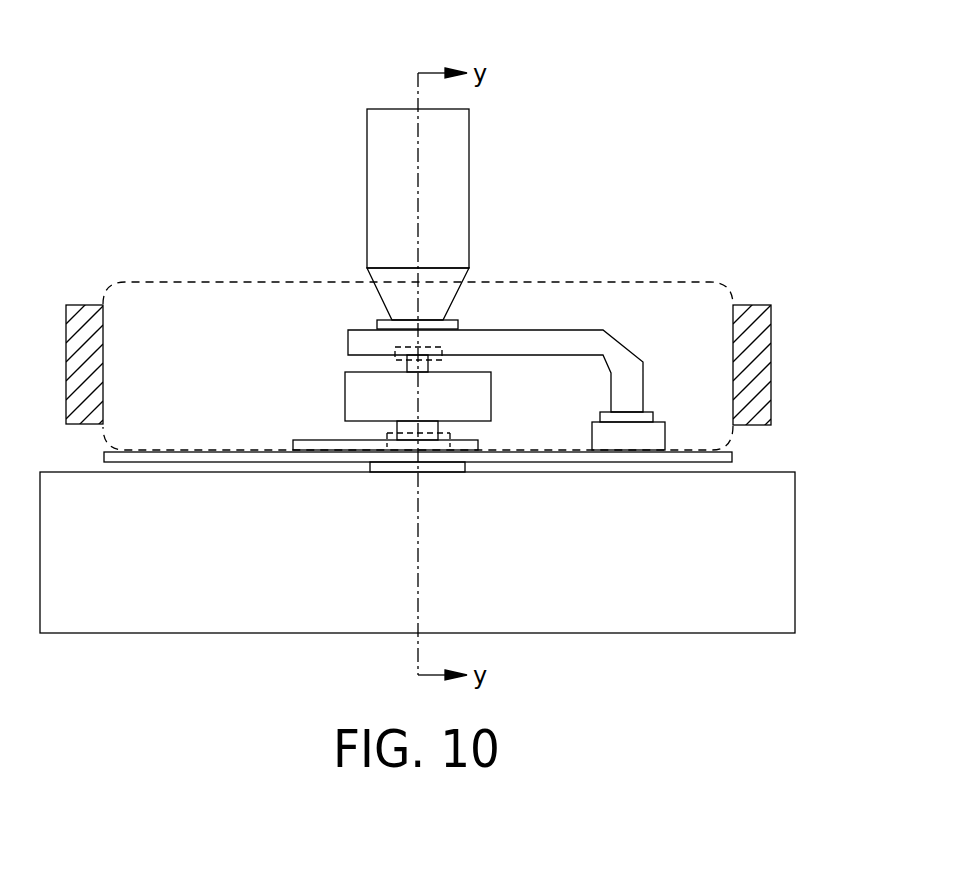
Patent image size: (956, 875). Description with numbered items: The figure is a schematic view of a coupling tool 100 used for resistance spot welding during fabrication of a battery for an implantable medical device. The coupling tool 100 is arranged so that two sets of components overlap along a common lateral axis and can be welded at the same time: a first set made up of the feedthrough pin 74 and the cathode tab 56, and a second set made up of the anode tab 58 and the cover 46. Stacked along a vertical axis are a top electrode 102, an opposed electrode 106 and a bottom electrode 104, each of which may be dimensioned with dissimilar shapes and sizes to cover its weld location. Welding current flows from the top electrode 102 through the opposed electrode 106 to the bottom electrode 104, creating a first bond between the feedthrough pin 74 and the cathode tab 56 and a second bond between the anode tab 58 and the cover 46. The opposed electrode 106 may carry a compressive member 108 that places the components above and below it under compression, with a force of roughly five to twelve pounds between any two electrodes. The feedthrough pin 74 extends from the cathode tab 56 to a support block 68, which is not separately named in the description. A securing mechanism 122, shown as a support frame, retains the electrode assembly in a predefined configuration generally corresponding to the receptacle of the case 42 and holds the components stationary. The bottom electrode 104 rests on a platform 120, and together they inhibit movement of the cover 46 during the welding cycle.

The coupling tool 100 is at (298, 31).
The top electrode 102 is at (469, 193).
The cathode tab 56 is at (458, 322).
The feedthrough pin 74 is at (573, 330).
The arm base block 68 is at (676, 393).
The securing mechanism 122 is at (64, 351).
The case 42 is at (188, 282).
The opposed electrode 106 is at (383, 370).
The compressive member 108 is at (343, 410).
The anode tab 58 is at (478, 440).
The cover 46 is at (103, 455).
The bottom electrode 104 is at (467, 470).
The platform 120 is at (796, 588).